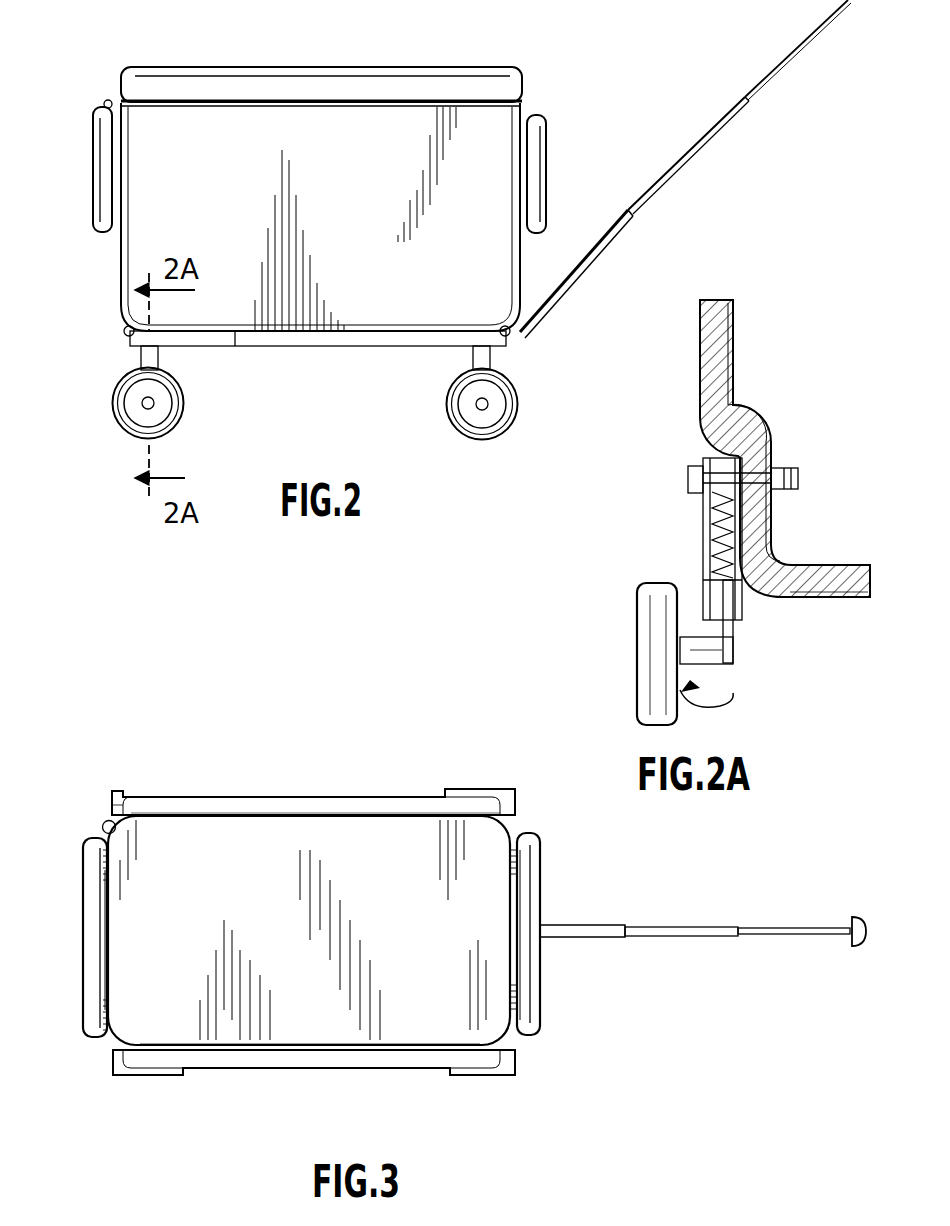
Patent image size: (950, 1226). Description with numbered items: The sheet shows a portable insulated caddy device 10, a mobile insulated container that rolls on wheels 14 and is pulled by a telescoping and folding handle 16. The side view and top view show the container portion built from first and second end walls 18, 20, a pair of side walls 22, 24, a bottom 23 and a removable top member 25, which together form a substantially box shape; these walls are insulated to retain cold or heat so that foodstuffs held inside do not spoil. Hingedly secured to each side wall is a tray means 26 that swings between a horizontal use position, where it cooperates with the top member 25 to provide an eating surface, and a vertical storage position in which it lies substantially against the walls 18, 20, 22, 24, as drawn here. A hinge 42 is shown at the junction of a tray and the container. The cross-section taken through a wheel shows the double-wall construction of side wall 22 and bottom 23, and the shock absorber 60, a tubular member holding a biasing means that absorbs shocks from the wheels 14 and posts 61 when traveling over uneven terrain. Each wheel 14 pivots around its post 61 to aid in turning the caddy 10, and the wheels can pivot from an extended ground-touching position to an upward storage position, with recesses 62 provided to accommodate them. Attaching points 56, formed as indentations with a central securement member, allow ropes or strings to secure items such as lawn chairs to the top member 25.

In FIG. 2, the portable insulated caddy device 10 is at (76, 176).
In FIG. 2, the wheels 14 is at (178, 425).
In FIG. 2A, the wheels 14 is at (637, 657).
In FIG. 2, the telescoping and folding handle 16 is at (700, 160).
In FIG. 3, the telescoping and folding handle 16 is at (790, 935).
In FIG. 3, the first end wall 18 is at (104, 942).
In FIG. 3, the second end wall 20 is at (532, 902).
In FIG. 2A, the side wall 22 is at (700, 372).
In FIG. 3, the side wall 22 is at (315, 1047).
In FIG. 2A, the bottom 23 is at (840, 600).
In FIG. 3, the side wall 24 is at (336, 808).
In FIG. 2, the removable top member 25 is at (343, 72).
In FIG. 3, the removable top member 25 is at (313, 954).
In FIG. 2, the tray means 26 is at (345, 221).
In FIG. 3, the tray means 26 is at (232, 806).
In FIG. 3, the hinge 42 is at (108, 818).
In FIG. 2, the attaching point 56 is at (120, 338).
In FIG. 2A, the shock absorber 60 is at (703, 522).
In FIG. 2A, the post 61 is at (738, 664).
In FIG. 2, the recesses 62 is at (210, 338).